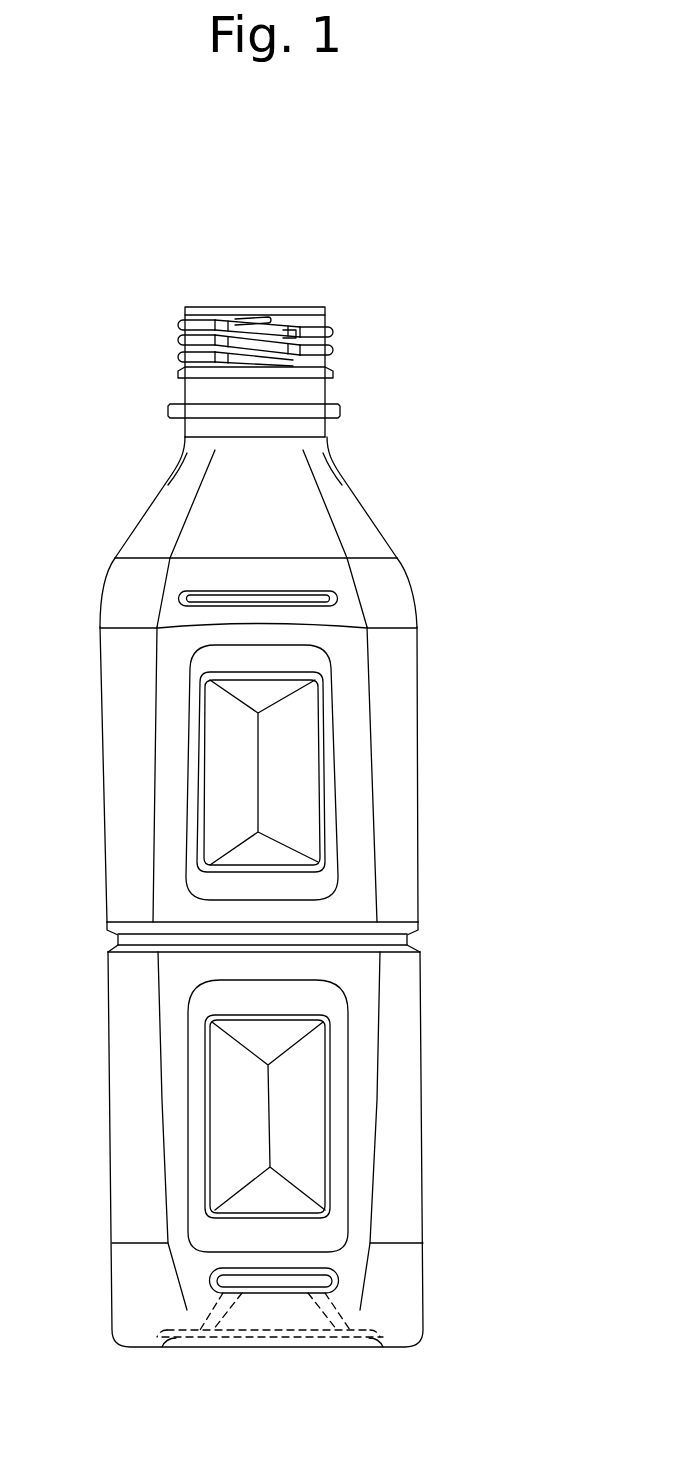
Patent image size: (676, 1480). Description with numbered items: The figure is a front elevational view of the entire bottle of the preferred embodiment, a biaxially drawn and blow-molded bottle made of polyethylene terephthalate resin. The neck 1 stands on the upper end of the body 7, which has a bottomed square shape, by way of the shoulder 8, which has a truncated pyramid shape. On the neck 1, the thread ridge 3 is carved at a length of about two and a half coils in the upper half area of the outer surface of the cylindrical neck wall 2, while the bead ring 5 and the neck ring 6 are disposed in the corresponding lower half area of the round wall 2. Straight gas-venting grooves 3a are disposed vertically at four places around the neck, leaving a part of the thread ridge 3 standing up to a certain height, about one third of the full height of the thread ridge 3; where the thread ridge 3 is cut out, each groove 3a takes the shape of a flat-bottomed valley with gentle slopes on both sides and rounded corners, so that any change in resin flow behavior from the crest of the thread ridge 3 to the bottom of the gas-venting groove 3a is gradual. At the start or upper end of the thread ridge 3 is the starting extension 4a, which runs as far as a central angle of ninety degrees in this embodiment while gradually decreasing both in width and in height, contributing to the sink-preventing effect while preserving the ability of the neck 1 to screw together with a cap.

The neck 1 is at (340, 303).
The cylindrical neck wall 2 is at (333, 358).
The thread ridge 3 is at (178, 340).
The gas-venting groove 3a is at (293, 327).
The starting extension 4a is at (237, 318).
The bead ring 5 is at (178, 372).
The neck ring 6 is at (340, 410).
The body 7 is at (418, 853).
The shoulder 8 is at (145, 514).